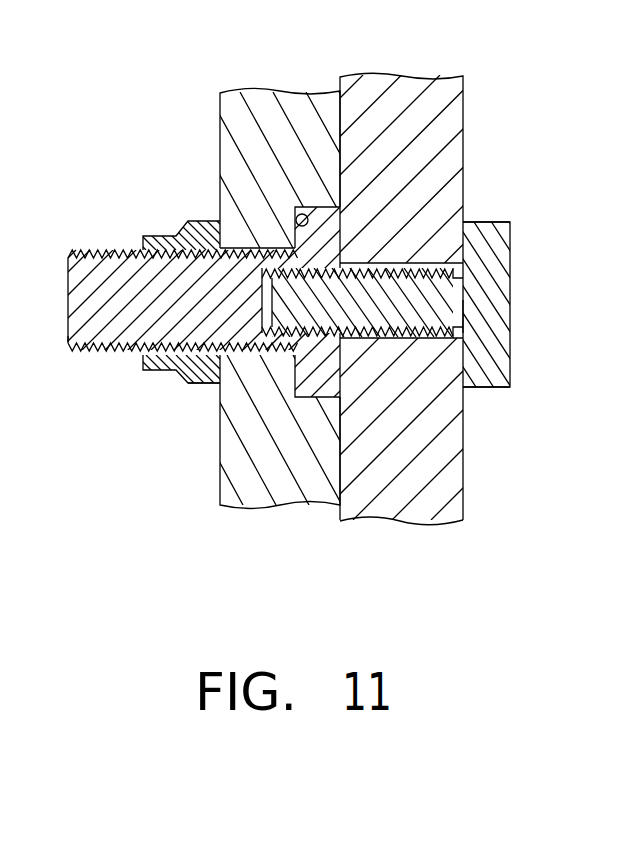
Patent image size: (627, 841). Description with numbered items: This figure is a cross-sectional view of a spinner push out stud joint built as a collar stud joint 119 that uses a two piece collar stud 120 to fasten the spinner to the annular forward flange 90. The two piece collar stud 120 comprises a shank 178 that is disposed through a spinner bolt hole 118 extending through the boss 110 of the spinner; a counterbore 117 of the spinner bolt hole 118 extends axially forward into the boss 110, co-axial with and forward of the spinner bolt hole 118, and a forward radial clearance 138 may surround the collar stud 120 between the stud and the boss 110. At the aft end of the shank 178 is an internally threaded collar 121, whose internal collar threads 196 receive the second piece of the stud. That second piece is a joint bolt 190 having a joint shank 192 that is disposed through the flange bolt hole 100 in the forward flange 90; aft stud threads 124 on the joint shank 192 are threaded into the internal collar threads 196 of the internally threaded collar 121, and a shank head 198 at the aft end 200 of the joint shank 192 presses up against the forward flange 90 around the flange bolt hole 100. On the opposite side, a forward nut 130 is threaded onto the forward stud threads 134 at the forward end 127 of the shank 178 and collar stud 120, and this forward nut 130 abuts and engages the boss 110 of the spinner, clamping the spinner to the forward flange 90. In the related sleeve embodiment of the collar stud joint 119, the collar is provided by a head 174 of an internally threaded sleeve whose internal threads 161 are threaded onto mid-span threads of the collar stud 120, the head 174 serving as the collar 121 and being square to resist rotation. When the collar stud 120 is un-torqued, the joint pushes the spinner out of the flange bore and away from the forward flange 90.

The forward flange 90 is at (378, 93).
The flange bolt hole 100 is at (400, 273).
The boss 110 is at (283, 103).
The counterbore 117 is at (293, 215).
The spinner bolt hole 118 is at (173, 252).
The collar stud joint 119 is at (192, 547).
The two piece collar stud 120 is at (222, 407).
The internally threaded collar 121 is at (298, 197).
The aft stud threads 124 is at (463, 387).
The forward end 127 is at (100, 345).
The forward nut 130 is at (167, 235).
The forward stud threads 134 is at (172, 341).
The forward radial clearance 138 is at (240, 352).
The internal threads 161 is at (258, 250).
The head 174 is at (215, 463).
The shank 178 is at (103, 303).
The joint bolt 190 is at (510, 307).
The joint shank 192 is at (440, 273).
The internal collar threads 196 is at (330, 330).
The shank head 198 is at (510, 253).
The aft end 200 is at (447, 303).